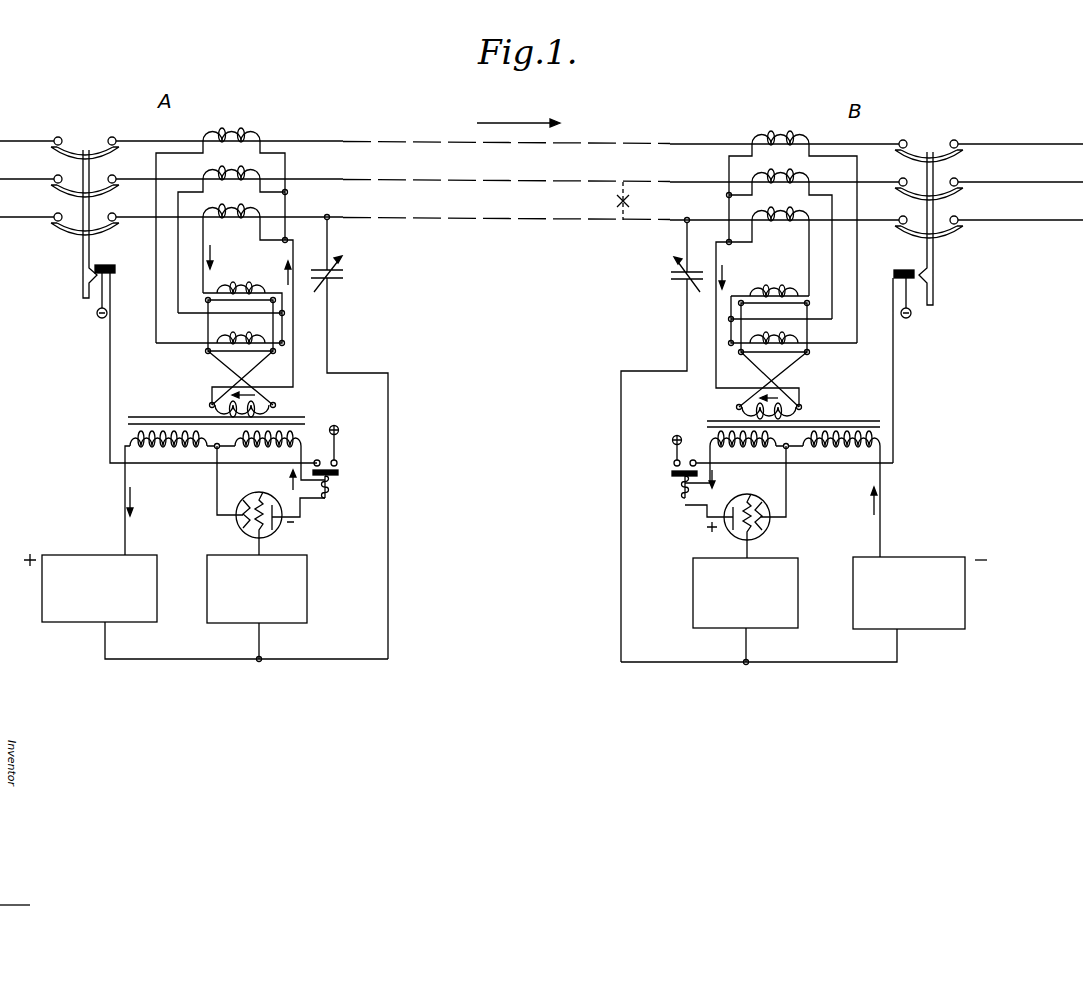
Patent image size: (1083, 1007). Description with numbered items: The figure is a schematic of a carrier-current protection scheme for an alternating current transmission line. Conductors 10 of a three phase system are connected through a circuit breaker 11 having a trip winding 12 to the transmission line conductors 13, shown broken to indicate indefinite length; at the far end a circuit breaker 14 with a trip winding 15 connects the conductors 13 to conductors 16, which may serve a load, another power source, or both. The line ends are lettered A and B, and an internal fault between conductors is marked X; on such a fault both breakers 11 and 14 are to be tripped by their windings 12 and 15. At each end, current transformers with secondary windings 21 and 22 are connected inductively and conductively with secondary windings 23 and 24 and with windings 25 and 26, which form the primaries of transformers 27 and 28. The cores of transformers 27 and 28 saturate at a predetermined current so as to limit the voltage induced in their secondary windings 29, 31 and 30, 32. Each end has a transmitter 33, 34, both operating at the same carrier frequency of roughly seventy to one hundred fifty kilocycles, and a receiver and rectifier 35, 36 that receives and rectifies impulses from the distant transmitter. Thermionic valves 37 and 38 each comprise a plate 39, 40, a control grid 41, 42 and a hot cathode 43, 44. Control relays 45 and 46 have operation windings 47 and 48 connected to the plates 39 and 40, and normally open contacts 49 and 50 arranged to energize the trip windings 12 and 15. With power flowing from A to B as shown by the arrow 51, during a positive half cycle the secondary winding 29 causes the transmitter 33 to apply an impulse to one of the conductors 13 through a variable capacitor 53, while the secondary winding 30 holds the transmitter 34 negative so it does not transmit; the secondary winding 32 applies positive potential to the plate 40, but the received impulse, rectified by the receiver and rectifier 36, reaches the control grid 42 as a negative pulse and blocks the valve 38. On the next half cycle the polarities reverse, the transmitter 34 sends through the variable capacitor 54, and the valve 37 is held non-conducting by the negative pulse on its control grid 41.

The conductors 10 is at (27, 213).
The circuit breaker 11 is at (88, 136).
The trip winding 12 is at (108, 265).
The conductors 13 is at (318, 216).
The circuit breaker 14 is at (928, 152).
The trip winding 15 is at (902, 270).
The conductors 16 is at (1049, 220).
The secondary winding 21 is at (203, 207).
The secondary winding 22 is at (797, 205).
The secondary winding 23 is at (260, 278).
The secondary winding 24 is at (772, 278).
The primary winding 25 is at (276, 408).
The primary winding 26 is at (736, 409).
The transformer 27 is at (181, 417).
The transformer 28 is at (823, 417).
The secondary winding 29 is at (172, 493).
The secondary winding 30 is at (831, 447).
The secondary winding 31 is at (274, 447).
The secondary winding 32 is at (737, 457).
The transmitter 33 is at (91, 552).
The transmitter 34 is at (931, 554).
The receiver and rectifier 35 is at (310, 582).
The receiver and rectifier 36 is at (692, 582).
The thermionic valve 37 is at (236, 526).
The thermionic valve 38 is at (774, 528).
The plate 39 is at (282, 524).
The plate 40 is at (728, 526).
The control grid 41 is at (270, 492).
The control grid 42 is at (740, 493).
The hot cathode 43 is at (246, 502).
The hot cathode 44 is at (780, 493).
The control relay 45 is at (335, 489).
The control relay 46 is at (671, 486).
The operation winding 47 is at (332, 498).
The operation winding 48 is at (679, 498).
The normally open contacts 49 is at (316, 459).
The normally open contacts 50 is at (684, 461).
The arrow 51 is at (527, 123).
The variable capacitor 53 is at (350, 277).
The variable capacitor 54 is at (668, 276).